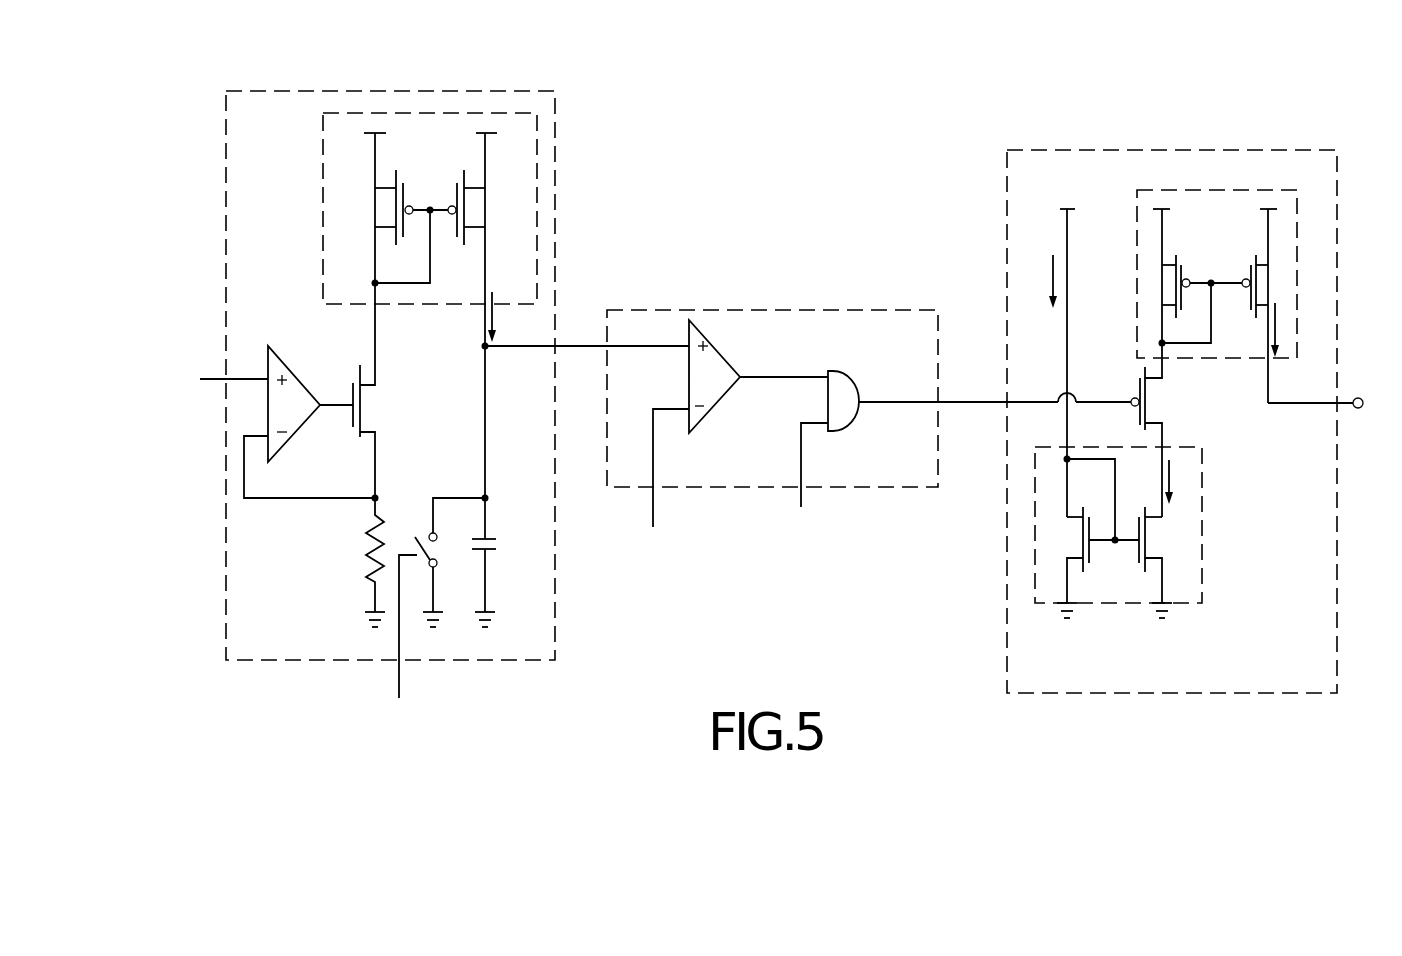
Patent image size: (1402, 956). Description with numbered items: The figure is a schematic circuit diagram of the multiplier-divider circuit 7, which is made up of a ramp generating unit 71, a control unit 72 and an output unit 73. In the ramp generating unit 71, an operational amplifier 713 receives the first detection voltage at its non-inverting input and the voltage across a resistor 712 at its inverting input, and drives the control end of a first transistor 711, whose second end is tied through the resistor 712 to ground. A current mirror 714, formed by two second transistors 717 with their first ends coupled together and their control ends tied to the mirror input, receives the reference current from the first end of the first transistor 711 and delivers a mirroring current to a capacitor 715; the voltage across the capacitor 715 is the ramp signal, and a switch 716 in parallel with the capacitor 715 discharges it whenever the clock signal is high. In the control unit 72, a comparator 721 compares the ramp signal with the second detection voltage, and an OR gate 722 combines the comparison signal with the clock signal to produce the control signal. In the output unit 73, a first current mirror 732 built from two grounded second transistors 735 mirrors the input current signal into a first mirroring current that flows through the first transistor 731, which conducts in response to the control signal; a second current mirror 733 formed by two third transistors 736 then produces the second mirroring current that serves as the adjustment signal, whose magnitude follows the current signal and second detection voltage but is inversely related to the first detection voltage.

The multiplier-divider circuit 7 is at (972, 88).
The ramp generating unit 71 is at (358, 90).
The first transistor 711 is at (370, 400).
The resistor 712 is at (370, 523).
The operational amplifier 713 is at (282, 352).
The current mirror 714 is at (322, 151).
The capacitor 715 is at (489, 537).
The switch 716 is at (418, 516).
The second transistors 717 is at (457, 188).
The control unit 72 is at (745, 307).
The comparator 721 is at (725, 393).
The OR gate 722 is at (853, 418).
The output unit 73 is at (1110, 150).
The first transistor 731 is at (1134, 396).
The first current mirror 732 is at (1110, 604).
The second current mirror 733 is at (1135, 285).
The second transistors 735 is at (1133, 545).
The third transistors 736 is at (1243, 265).